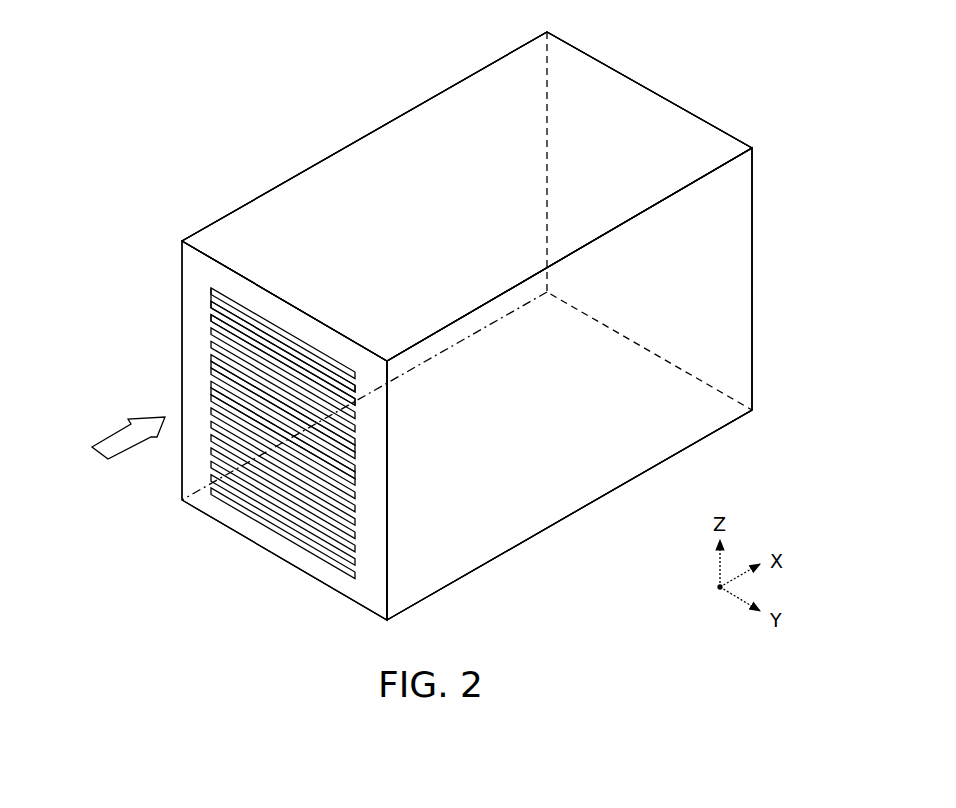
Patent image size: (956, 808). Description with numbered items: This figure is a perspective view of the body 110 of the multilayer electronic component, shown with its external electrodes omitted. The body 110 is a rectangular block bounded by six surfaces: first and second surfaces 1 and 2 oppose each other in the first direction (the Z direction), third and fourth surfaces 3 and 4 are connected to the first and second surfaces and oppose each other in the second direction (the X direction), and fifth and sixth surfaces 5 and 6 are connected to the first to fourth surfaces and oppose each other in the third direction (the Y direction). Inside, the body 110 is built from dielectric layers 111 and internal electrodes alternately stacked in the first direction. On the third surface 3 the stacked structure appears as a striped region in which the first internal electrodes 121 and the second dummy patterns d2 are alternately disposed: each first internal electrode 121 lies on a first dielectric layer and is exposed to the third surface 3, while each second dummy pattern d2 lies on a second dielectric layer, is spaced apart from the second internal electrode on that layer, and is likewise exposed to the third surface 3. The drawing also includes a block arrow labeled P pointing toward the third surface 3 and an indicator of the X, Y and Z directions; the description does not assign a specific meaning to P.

The first surface 1 is at (505, 487).
The second surface 2 is at (503, 122).
The third surface 3 is at (272, 485).
The fourth surface 4 is at (662, 123).
The fifth surface 5 is at (620, 383).
The sixth surface 6 is at (290, 218).
The body 110 is at (407, 162).
The dielectric layers 111 is at (213, 396).
The first internal electrode 121 is at (213, 343).
The second dummy pattern d2 is at (212, 304).
The airflow direction P is at (124, 449).